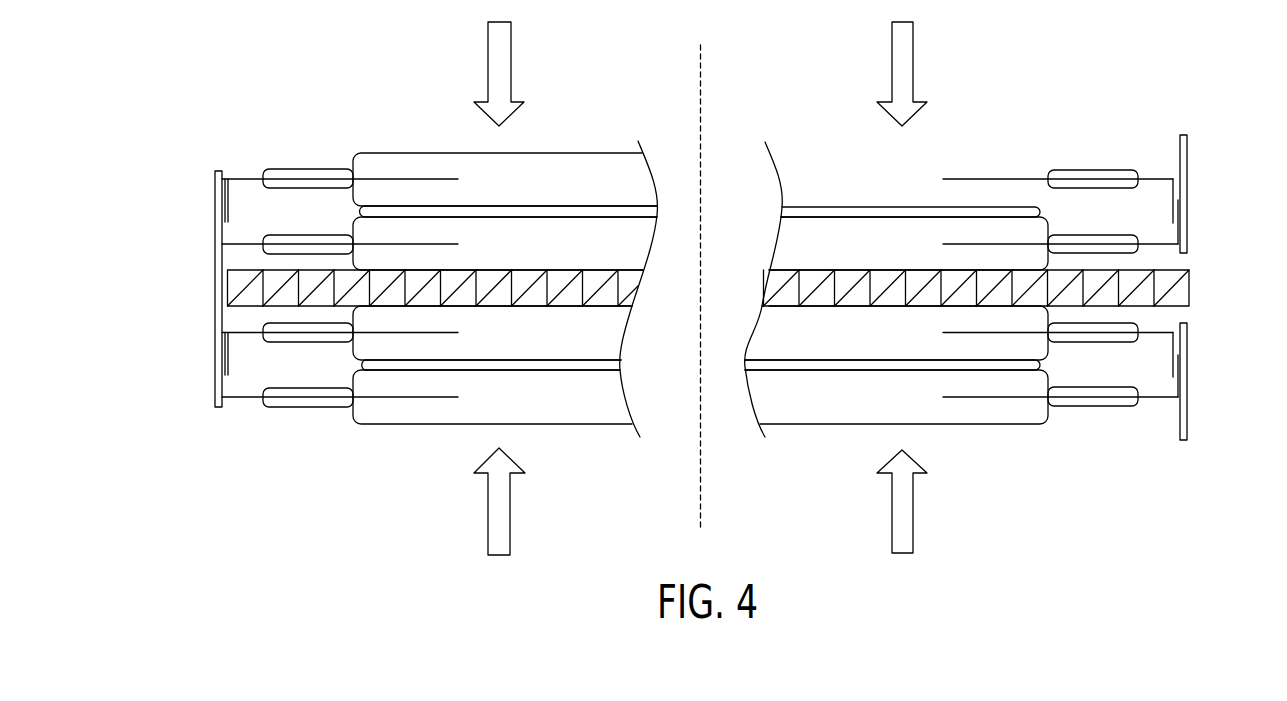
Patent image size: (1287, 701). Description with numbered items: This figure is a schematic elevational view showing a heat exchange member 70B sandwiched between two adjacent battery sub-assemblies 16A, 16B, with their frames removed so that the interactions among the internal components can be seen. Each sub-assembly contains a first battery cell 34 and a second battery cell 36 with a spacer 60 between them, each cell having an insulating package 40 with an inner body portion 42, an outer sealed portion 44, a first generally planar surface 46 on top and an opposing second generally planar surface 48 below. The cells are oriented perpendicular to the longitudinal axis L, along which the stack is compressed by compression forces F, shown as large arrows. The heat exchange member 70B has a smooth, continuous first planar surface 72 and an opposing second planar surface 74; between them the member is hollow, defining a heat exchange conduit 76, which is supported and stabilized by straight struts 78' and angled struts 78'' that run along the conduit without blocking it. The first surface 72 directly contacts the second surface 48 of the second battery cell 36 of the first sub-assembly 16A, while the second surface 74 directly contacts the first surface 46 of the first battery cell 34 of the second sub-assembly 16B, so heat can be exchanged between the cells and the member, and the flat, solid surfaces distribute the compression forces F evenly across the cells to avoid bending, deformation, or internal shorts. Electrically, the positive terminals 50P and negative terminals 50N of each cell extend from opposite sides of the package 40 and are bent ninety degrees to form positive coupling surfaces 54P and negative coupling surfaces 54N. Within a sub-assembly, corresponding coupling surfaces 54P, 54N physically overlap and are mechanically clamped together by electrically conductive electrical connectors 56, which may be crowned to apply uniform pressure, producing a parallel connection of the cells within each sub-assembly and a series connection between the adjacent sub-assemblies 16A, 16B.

The first battery sub-assembly 16A is at (252, 118).
The second battery sub-assembly 16B is at (253, 457).
The first battery cell 34 is at (635, 180).
The second battery cell 36 is at (632, 247).
The package 40 is at (982, 152).
The inner body portion 42 is at (1040, 152).
The outer sealed portion 44 is at (1082, 170).
The first generally planar surface 46 is at (575, 152).
The second generally planar surface 48 is at (518, 206).
The negative terminal 50N is at (250, 177).
The positive terminal 50P is at (242, 333).
The negative coupling surface 54N is at (1180, 385).
The positive coupling surface 54P is at (1180, 215).
The electrical connector 56 is at (217, 267).
The spacer 60 is at (630, 212).
The heat exchange member 70B is at (232, 288).
The first generally planar surface 72 is at (817, 270).
The second generally planar surface 74 is at (815, 308).
The heat exchange conduit 76 is at (607, 306).
The straight strut 78' is at (496, 247).
The angled strut 78'' is at (551, 253).
The compression force F is at (487, 515).
The longitudinal axis L is at (703, 88).